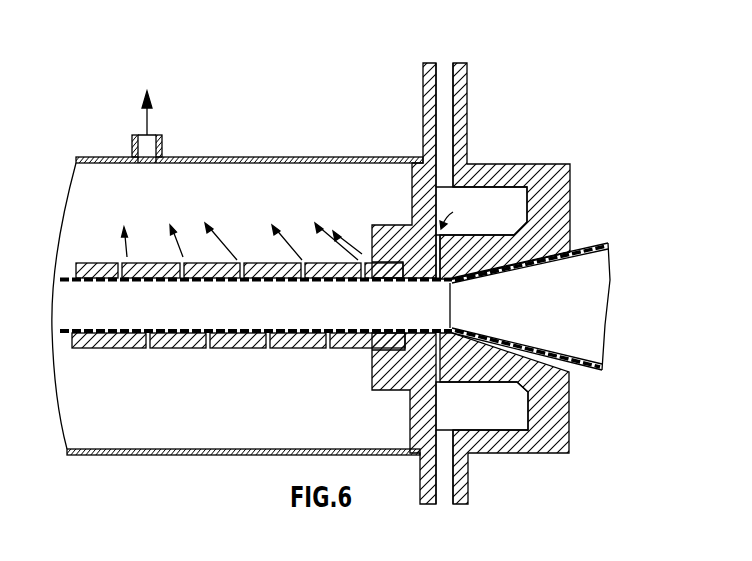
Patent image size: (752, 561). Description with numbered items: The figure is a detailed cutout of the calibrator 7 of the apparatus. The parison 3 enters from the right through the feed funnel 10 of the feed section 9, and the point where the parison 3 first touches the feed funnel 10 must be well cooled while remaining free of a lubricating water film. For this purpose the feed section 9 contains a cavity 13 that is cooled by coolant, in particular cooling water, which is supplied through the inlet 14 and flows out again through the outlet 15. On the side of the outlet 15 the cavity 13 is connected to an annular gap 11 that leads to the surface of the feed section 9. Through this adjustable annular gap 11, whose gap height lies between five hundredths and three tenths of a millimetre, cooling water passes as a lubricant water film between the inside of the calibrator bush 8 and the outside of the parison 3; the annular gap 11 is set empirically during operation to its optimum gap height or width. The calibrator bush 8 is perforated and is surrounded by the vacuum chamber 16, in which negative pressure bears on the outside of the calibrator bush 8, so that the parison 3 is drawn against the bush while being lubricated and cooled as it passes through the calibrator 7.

The parison 3 is at (587, 253).
The calibrator 7 is at (283, 385).
The calibrator bush 8 is at (410, 356).
The feed section 9 is at (507, 173).
The feed funnel 10 is at (530, 256).
The annular gap 11 is at (463, 280).
The cavity 13 is at (473, 202).
The inlet 14 is at (447, 489).
The outlet 15 is at (444, 72).
The vacuum chamber 16 is at (258, 158).